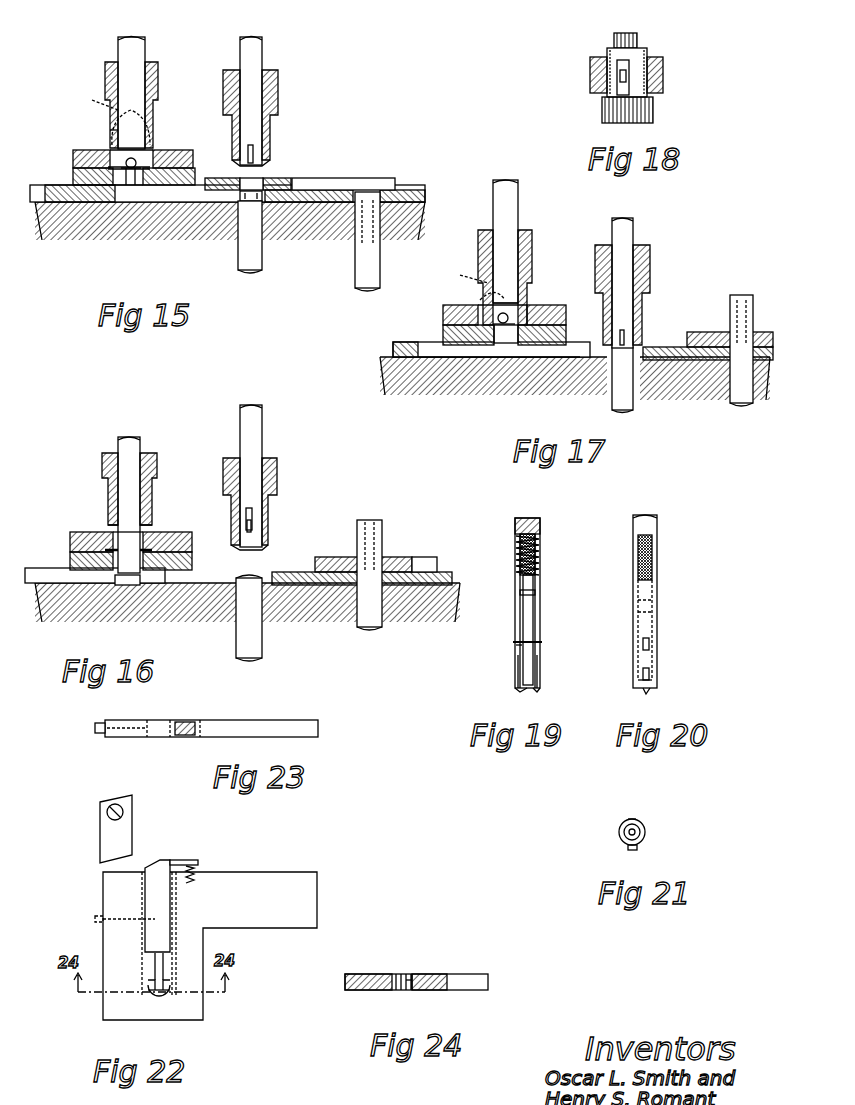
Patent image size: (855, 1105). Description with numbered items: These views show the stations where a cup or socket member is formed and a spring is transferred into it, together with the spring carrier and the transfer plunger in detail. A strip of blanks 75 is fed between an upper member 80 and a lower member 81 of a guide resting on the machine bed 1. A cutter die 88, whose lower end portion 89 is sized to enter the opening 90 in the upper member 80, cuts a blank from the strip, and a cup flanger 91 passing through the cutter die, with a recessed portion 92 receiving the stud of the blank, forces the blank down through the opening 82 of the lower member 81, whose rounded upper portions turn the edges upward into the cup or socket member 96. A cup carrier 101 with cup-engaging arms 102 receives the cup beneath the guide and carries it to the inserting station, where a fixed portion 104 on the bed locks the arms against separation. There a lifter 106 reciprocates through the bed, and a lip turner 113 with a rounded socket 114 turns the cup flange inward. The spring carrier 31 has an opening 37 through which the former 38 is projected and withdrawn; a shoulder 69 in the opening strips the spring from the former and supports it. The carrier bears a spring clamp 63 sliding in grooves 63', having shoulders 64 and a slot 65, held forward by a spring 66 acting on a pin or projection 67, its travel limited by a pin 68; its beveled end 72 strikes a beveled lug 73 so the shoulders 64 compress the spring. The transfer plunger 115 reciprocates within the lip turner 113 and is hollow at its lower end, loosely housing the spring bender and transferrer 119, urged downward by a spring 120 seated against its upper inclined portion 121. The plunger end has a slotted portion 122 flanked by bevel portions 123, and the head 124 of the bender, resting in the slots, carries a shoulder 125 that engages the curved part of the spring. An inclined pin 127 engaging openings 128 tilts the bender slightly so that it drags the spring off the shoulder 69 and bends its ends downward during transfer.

In FIG. 15, the machine bed 1 is at (43, 228).
In FIG. 17, the machine bed 1 is at (382, 360).
In FIG. 15, the spring carrier 31 is at (346, 180).
In FIG. 17, the spring carrier 31 is at (703, 332).
In FIG. 16, the spring carrier 31 is at (395, 560).
In FIG. 23, the spring carrier 31 is at (236, 722).
In FIG. 22, the spring carrier 31 is at (258, 872).
In FIG. 24, the spring carrier 31 is at (435, 976).
In FIG. 15, the opening 37 is at (256, 178).
In FIG. 22, the opening 37 is at (162, 1000).
In FIG. 24, the opening 37 is at (398, 975).
In FIG. 15, the former 38 is at (360, 265).
In FIG. 17, the former 38 is at (740, 398).
In FIG. 16, the former 38 is at (383, 526).
In FIG. 22, the spring clamp 63 is at (115, 932).
In FIG. 22, the grooves 63' is at (206, 933).
In FIG. 24, the grooves 63' is at (448, 942).
In FIG. 22, the shoulders 64 is at (148, 982).
In FIG. 22, the slot 65 is at (150, 970).
In FIG. 22, the spring 66 is at (198, 862).
In FIG. 23, the pin or projection 67 is at (190, 722).
In FIG. 22, the pin or projection 67 is at (182, 860).
In FIG. 23, the pin 68 is at (95, 727).
In FIG. 22, the pin 68 is at (96, 916).
In FIG. 22, the shoulder 69 is at (150, 1000).
In FIG. 24, the shoulder 69 is at (412, 988).
In FIG. 22, the beveled end 72 is at (152, 860).
In FIG. 22, the beveled lug 73 is at (102, 842).
In FIG. 15, the strip of blanks 75 is at (124, 180).
In FIG. 17, the strip of blanks 75 is at (508, 350).
In FIG. 16, the strip of blanks 75 is at (140, 540).
In FIG. 15, the upper member 80 is at (168, 152).
In FIG. 17, the upper member 80 is at (556, 306).
In FIG. 16, the upper member 80 is at (192, 540).
In FIG. 15, the lower member 81 is at (165, 188).
In FIG. 17, the lower member 81 is at (567, 332).
In FIG. 16, the lower member 81 is at (192, 560).
In FIG. 15, the opening 82 is at (120, 172).
In FIG. 15, the cutter die 88 is at (158, 82).
In FIG. 17, the cutter die 88 is at (532, 243).
In FIG. 16, the cutter die 88 is at (157, 464).
In FIG. 15, the lower end portion 89 is at (110, 130).
In FIG. 17, the lower end portion 89 is at (520, 300).
In FIG. 16, the lower end portion 89 is at (152, 508).
In FIG. 15, the opening 90 is at (122, 152).
In FIG. 16, the opening 90 is at (112, 538).
In FIG. 15, the cup flanger 91 is at (124, 48).
In FIG. 17, the cup flanger 91 is at (518, 202).
In FIG. 16, the cup flanger 91 is at (122, 446).
In FIG. 15, the recessed portion 92 is at (107, 116).
In FIG. 17, the recessed portion 92 is at (470, 282).
In FIG. 16, the recessed portion 92 is at (105, 550).
In FIG. 15, the cup or socket member 96 is at (240, 200).
In FIG. 16, the cup or socket member 96 is at (128, 588).
In FIG. 15, the cup carrier 101 is at (48, 188).
In FIG. 17, the cup carrier 101 is at (402, 342).
In FIG. 15, the cup-engaging arms 102 is at (208, 196).
In FIG. 17, the cup-engaging arms 102 is at (448, 352).
In FIG. 16, the cup-engaging arms 102 is at (65, 585).
In FIG. 15, the fixed portion 104 is at (316, 204).
In FIG. 17, the fixed portion 104 is at (660, 350).
In FIG. 16, the fixed portion 104 is at (300, 572).
In FIG. 15, the lifter 106 is at (243, 262).
In FIG. 18, the lifter 106 is at (653, 117).
In FIG. 17, the lifter 106 is at (630, 396).
In FIG. 16, the lifter 106 is at (262, 640).
In FIG. 15, the lip turner 113 is at (278, 112).
In FIG. 18, the lip turner 113 is at (663, 82).
In FIG. 17, the lip turner 113 is at (650, 266).
In FIG. 16, the lip turner 113 is at (278, 478).
In FIG. 15, the rounded socket 114 is at (236, 162).
In FIG. 16, the rounded socket 114 is at (254, 550).
In FIG. 15, the transfer plunger 115 is at (250, 52).
In FIG. 18, the transfer plunger 115 is at (645, 50).
In FIG. 17, the transfer plunger 115 is at (630, 232).
In FIG. 16, the transfer plunger 115 is at (258, 432).
In FIG. 19, the transfer plunger 115 is at (515, 522).
In FIG. 20, the transfer plunger 115 is at (655, 522).
In FIG. 21, the transfer plunger 115 is at (645, 836).
In FIG. 18, the spring bender and transferrer 119 is at (626, 33).
In FIG. 19, the spring bender and transferrer 119 is at (533, 606).
In FIG. 19, the spring 120 is at (540, 548).
In FIG. 20, the spring 120 is at (657, 552).
In FIG. 19, the upper inclined portion 121 is at (520, 588).
In FIG. 18, the slotted portion 122 is at (617, 62).
In FIG. 16, the slotted portion 122 is at (252, 516).
In FIG. 19, the slotted portion 122 is at (518, 670).
In FIG. 20, the slotted portion 122 is at (650, 670).
In FIG. 20, the bevel portions 123 is at (643, 690).
In FIG. 15, the head 124 is at (256, 158).
In FIG. 18, the head 124 is at (628, 76).
In FIG. 17, the head 124 is at (626, 336).
In FIG. 16, the head 124 is at (252, 528).
In FIG. 19, the head 124 is at (517, 685).
In FIG. 20, the head 124 is at (652, 678).
In FIG. 21, the head 124 is at (633, 818).
In FIG. 21, the shoulder 125 is at (640, 850).
In FIG. 19, the inclined pin 127 is at (542, 641).
In FIG. 20, the inclined pin 127 is at (650, 644).
In FIG. 19, the openings 128 is at (518, 642).
In FIG. 20, the openings 128 is at (655, 628).